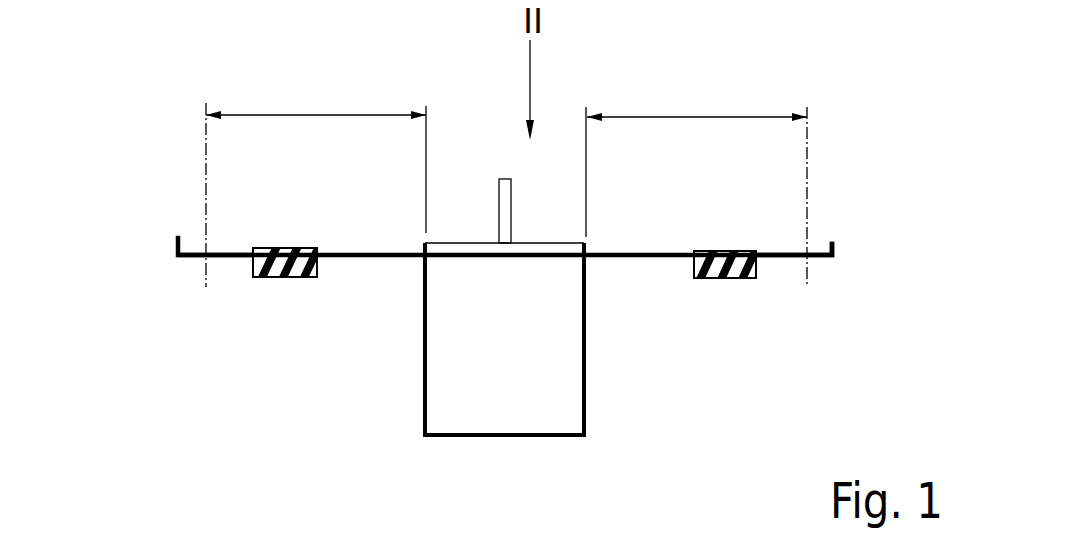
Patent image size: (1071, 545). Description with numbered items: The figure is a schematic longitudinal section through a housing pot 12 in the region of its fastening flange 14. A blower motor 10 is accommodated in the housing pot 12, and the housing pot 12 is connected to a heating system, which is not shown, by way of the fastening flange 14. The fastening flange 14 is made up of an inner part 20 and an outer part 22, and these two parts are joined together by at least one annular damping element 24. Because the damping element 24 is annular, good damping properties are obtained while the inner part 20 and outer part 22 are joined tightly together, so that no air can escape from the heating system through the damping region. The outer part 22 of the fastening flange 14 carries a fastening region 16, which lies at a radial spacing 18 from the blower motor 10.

The blower motor 10 is at (445, 397).
The housing pot 12 is at (586, 380).
The fastening flange 14 is at (241, 325).
The fastening region 16 is at (202, 275).
The radial spacing 18 is at (762, 117).
The inner part 20 is at (670, 260).
The outer part 22 is at (817, 257).
The annular damping element 24 is at (278, 263).